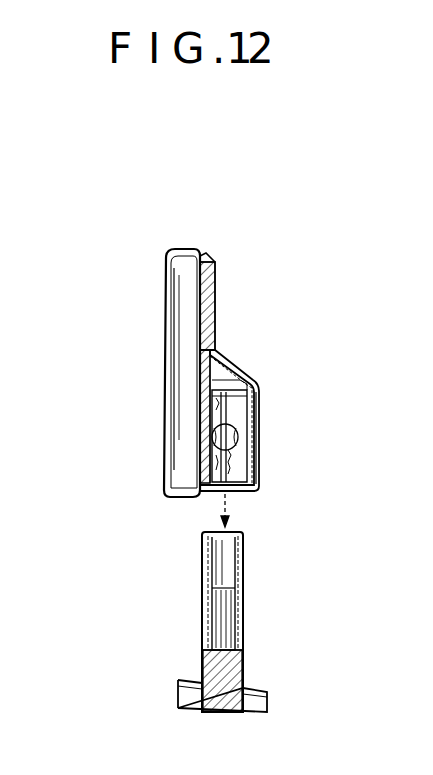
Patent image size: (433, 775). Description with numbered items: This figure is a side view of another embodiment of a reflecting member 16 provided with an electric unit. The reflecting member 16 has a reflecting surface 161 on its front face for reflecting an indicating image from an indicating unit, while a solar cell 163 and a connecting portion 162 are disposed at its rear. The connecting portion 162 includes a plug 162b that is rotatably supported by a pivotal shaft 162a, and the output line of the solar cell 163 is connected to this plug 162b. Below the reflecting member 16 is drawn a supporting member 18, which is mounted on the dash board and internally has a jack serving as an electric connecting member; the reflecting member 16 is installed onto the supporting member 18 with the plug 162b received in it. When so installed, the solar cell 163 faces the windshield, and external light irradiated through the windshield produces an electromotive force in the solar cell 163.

The reflecting member 16 is at (209, 256).
The solar cell 163 is at (207, 292).
The connecting portion 162 is at (227, 362).
The pivotal shaft 162a is at (233, 378).
The plug 162b is at (257, 467).
The reflecting surface 161 is at (157, 412).
The supporting member 18 is at (245, 582).